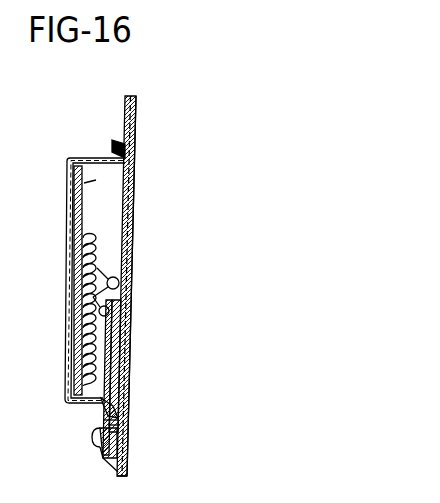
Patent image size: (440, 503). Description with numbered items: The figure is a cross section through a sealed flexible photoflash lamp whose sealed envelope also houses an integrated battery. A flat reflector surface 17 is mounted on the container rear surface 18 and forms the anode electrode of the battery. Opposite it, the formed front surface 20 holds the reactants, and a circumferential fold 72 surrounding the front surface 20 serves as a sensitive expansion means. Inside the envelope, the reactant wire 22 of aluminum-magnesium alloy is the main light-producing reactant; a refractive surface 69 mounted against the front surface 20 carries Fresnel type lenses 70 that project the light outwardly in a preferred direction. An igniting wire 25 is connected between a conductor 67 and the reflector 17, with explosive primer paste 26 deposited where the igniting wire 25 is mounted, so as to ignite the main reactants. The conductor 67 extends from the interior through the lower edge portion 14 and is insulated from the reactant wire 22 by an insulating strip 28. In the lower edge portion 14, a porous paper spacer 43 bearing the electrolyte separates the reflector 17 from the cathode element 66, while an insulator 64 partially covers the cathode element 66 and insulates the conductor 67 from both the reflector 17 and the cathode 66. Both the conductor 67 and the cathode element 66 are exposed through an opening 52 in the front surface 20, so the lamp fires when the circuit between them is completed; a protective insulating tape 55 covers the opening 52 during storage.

The lower edge portion 14 is at (121, 477).
The reflector surface 17 is at (134, 188).
The container rear surface 18 is at (132, 233).
The front surface 20 is at (67, 198).
The reactant wire 22 is at (83, 262).
The igniting wire 25 is at (93, 297).
The explosive primer paste 26 is at (118, 287).
The insulating strip 28 is at (117, 344).
The porous paper spacer 43 is at (112, 441).
The opening 52 is at (93, 440).
The protective insulating tape 55 is at (93, 436).
The insulator 64 is at (109, 369).
The cathode element 66 is at (121, 424).
The conductor 67 is at (114, 397).
The refractive surface 69 is at (86, 182).
The Fresnel type lenses 70 is at (78, 231).
The circumferential fold 72 is at (115, 150).